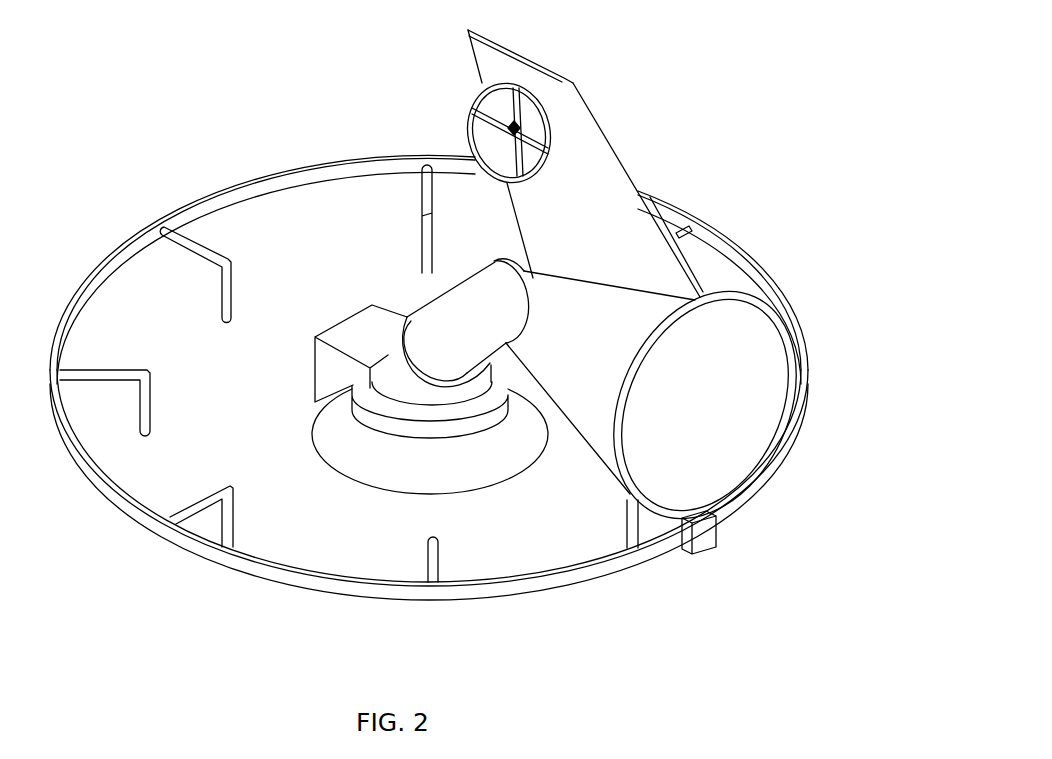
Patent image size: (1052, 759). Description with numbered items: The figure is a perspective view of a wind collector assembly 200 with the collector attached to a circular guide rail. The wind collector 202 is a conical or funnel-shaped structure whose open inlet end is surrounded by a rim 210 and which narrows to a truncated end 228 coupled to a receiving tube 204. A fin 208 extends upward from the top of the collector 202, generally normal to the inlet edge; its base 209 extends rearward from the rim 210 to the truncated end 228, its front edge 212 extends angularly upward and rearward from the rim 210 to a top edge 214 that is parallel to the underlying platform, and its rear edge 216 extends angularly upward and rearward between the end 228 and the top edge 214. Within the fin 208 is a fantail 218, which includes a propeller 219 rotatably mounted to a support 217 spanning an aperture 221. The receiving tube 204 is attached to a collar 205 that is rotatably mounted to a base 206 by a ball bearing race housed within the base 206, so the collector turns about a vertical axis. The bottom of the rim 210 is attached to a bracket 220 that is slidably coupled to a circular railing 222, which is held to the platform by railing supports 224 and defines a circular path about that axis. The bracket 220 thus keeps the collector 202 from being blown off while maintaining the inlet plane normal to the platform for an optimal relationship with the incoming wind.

The wind collector assembly 200 is at (156, 125).
The wind collector 202 is at (582, 390).
The receiving tube 204 is at (447, 313).
The collar 205 is at (425, 415).
The base 206 is at (337, 463).
The fin 208 is at (578, 168).
The base of fin 209 is at (648, 270).
The rim 210 is at (787, 303).
The front edge 212 is at (587, 112).
The top edge 214 is at (543, 58).
The rear edge 216 is at (517, 222).
The support 217 is at (523, 183).
The fantail 218 is at (469, 156).
The propeller 219 is at (550, 160).
The bracket 220 is at (703, 538).
The aperture 221 is at (480, 104).
The circular railing 222 is at (267, 568).
The railing supports 224 is at (427, 195).
The truncated end 228 is at (513, 298).